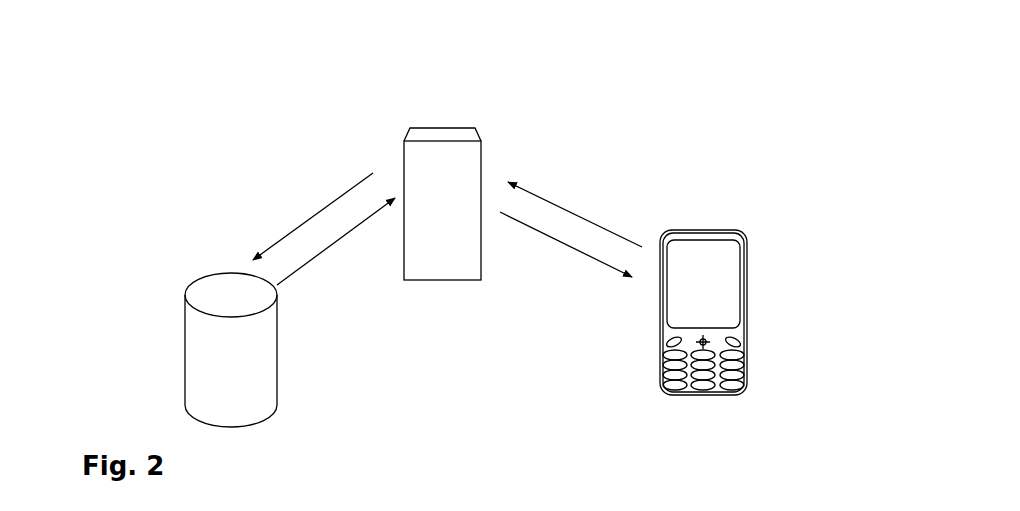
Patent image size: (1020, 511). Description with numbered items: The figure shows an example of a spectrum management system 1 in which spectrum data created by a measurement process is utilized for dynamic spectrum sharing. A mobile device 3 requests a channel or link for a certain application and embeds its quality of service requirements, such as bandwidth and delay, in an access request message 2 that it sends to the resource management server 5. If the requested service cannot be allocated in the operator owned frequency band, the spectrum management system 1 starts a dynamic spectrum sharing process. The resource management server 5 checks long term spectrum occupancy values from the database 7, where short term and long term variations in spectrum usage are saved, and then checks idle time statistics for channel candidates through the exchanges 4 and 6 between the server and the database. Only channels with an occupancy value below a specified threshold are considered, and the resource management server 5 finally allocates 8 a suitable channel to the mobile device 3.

The spectrum management system 1 is at (713, 140).
The access request message 2 is at (577, 213).
The mobile device 3 is at (730, 275).
The database query 4 is at (305, 222).
The resource management server 5 is at (452, 137).
The database response 6 is at (333, 250).
The database 7 is at (197, 397).
The channel allocation 8 is at (568, 247).